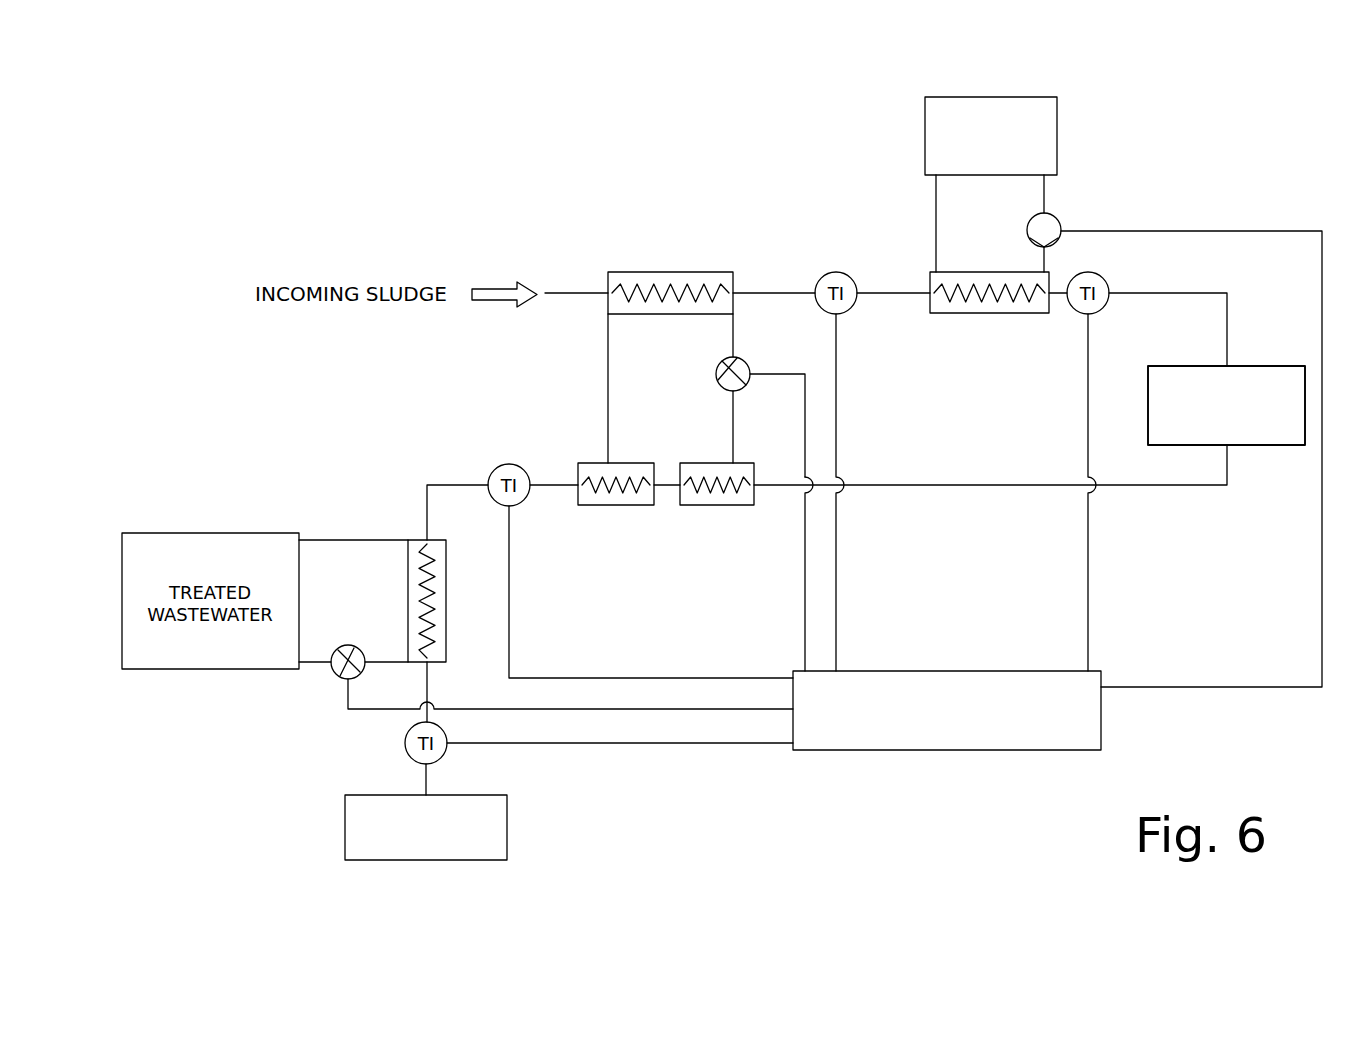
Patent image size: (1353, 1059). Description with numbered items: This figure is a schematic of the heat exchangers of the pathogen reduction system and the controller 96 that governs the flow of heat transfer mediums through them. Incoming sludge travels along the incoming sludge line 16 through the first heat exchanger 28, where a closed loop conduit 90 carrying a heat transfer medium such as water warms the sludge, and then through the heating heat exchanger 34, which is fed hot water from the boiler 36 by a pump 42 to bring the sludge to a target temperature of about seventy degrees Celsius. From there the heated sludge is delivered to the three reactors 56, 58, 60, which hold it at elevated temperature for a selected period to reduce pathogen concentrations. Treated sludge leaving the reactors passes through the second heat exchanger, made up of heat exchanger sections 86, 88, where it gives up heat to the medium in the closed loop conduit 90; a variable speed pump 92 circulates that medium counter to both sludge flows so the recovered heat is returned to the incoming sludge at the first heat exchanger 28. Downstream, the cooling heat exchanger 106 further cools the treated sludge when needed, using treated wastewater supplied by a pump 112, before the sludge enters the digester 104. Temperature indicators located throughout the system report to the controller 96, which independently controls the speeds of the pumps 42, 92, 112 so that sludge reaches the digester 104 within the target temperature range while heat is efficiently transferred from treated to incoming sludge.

The incoming sludge line 16 is at (581, 293).
The first heat exchanger 28 is at (669, 265).
The heating heat exchanger 34 is at (985, 324).
The boiler 36 is at (1020, 97).
The pump 42 is at (1057, 220).
The reactor 56 is at (1226, 405).
The reactor 58 is at (1226, 405).
The reactor 60 is at (1226, 405).
The heat exchanger section 86 is at (717, 515).
The heat exchanger section 88 is at (612, 515).
The closed loop conduit 90 is at (607, 366).
The variable speed pump 92 is at (742, 361).
The controller 96 is at (882, 750).
The digester 104 is at (507, 811).
The cooling heat exchanger 106 is at (407, 528).
The pump 112 is at (336, 672).